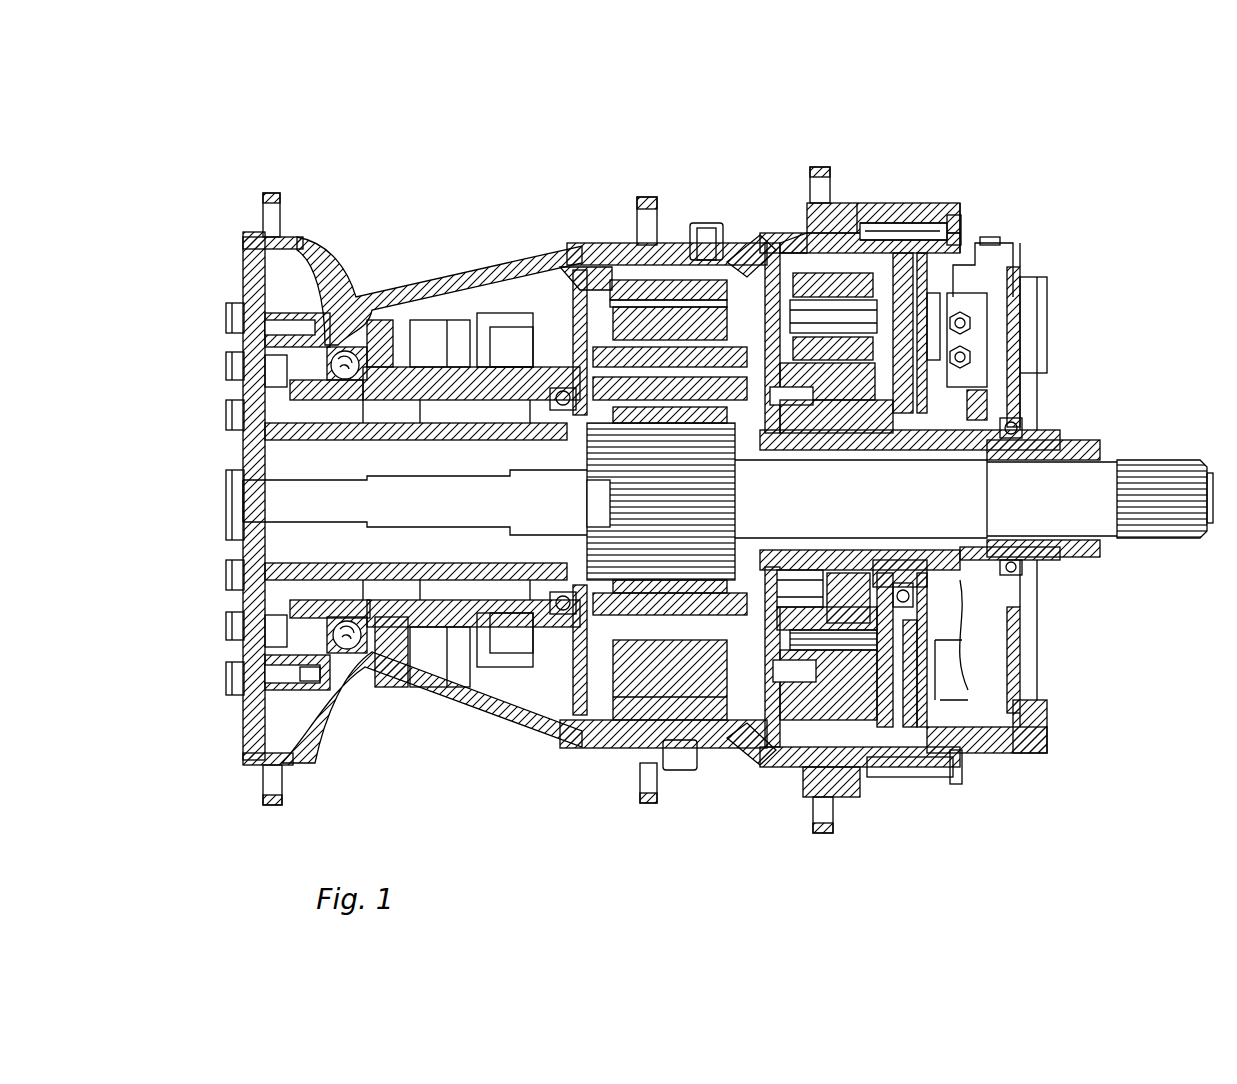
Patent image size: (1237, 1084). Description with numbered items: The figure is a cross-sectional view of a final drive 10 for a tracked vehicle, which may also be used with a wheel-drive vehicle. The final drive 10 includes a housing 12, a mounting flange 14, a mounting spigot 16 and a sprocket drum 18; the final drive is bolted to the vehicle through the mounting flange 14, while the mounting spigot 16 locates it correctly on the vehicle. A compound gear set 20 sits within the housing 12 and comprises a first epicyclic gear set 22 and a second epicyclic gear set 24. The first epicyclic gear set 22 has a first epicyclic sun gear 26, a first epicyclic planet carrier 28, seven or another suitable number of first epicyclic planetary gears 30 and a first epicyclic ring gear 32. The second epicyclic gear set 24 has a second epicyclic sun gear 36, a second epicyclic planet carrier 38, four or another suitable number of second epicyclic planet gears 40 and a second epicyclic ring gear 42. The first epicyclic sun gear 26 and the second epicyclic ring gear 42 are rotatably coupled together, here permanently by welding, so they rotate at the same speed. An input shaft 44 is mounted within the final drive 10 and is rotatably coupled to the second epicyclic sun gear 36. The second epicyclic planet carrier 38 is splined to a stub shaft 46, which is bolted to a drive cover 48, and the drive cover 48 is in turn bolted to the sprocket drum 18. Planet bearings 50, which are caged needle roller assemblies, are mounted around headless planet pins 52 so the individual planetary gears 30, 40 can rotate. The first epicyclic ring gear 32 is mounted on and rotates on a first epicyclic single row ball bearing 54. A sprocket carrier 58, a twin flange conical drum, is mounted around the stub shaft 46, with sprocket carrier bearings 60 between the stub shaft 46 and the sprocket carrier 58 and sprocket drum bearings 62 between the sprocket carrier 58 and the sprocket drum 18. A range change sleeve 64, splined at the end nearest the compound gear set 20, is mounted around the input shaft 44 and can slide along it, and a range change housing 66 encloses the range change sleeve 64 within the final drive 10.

The final drive 10 is at (478, 183).
The housing 12 is at (847, 225).
The mounting flange 14 is at (820, 175).
The mounting spigot 16 is at (840, 205).
The sprocket drum 18 is at (520, 280).
The compound gear set 20 is at (745, 773).
The first epicyclic gear set 22 is at (884, 803).
The second epicyclic gear set 24 is at (603, 765).
The first epicyclic sun gear 26 is at (878, 378).
The first epicyclic planet carrier 28 is at (773, 258).
The first epicyclic planetary gears 30 is at (868, 258).
The first epicyclic ring gear 32 is at (900, 262).
The second epicyclic sun gear 36 is at (575, 633).
The second epicyclic planet carrier 38 is at (573, 320).
The second epicyclic planet gears 40 is at (643, 325).
The second epicyclic ring gear 42 is at (690, 752).
The input shaft 44 is at (1097, 475).
The stub shaft 46 is at (283, 544).
The drive cover 48 is at (262, 418).
The planet bearings 50 is at (677, 347).
The planet pins 52 is at (612, 365).
The first epicyclic single row ball bearing 54 is at (905, 395).
The sprocket carrier 58 is at (417, 390).
The sprocket carrier bearings 60 is at (560, 397).
The sprocket drum bearings 62 is at (348, 347).
The range change sleeve 64 is at (980, 428).
The range change housing 66 is at (865, 372).